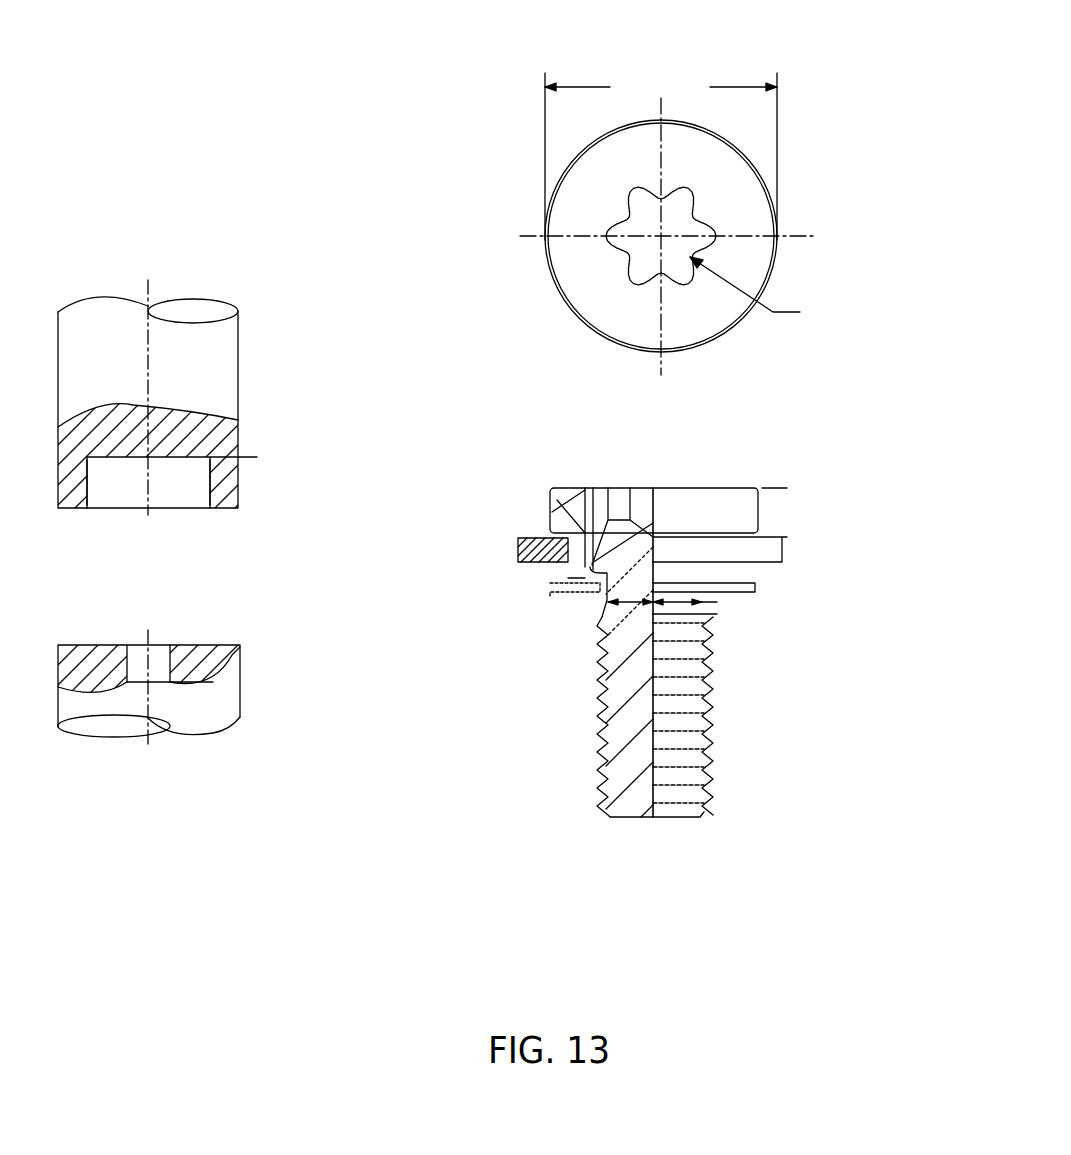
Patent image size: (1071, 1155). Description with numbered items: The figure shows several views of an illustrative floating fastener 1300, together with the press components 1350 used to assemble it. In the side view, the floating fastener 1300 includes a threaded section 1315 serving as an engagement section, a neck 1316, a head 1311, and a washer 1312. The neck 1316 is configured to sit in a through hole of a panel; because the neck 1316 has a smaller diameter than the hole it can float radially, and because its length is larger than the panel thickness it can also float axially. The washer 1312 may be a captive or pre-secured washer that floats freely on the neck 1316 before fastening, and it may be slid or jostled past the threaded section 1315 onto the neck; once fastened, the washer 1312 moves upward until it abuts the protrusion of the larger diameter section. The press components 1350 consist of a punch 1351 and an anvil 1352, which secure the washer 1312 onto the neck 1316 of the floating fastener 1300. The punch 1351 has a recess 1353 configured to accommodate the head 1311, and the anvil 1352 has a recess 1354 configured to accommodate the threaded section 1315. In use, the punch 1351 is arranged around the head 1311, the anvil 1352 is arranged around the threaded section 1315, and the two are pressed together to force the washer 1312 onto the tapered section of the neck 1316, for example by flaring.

The floating fastener 1300 is at (708, 26).
The head 1311 is at (758, 510).
The washer 1312 is at (758, 595).
The threaded section 1315 is at (890, 817).
The neck 1316 is at (593, 571).
The press components 1350 is at (192, 209).
The punch 1351 is at (240, 473).
The anvil 1352 is at (240, 703).
The recess 1353 is at (135, 477).
The recess 1354 is at (157, 661).